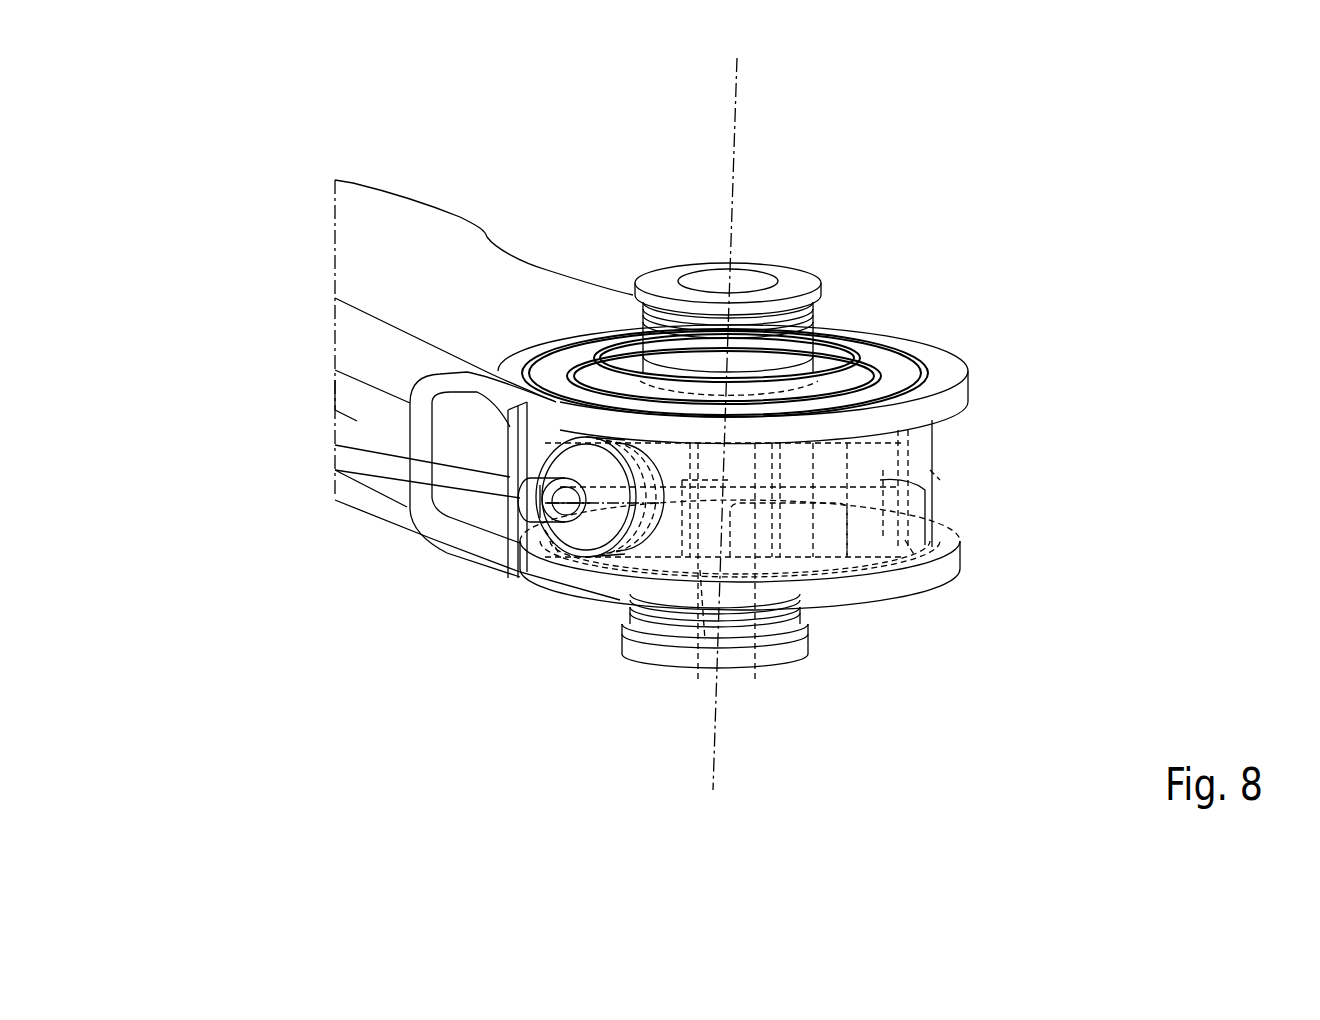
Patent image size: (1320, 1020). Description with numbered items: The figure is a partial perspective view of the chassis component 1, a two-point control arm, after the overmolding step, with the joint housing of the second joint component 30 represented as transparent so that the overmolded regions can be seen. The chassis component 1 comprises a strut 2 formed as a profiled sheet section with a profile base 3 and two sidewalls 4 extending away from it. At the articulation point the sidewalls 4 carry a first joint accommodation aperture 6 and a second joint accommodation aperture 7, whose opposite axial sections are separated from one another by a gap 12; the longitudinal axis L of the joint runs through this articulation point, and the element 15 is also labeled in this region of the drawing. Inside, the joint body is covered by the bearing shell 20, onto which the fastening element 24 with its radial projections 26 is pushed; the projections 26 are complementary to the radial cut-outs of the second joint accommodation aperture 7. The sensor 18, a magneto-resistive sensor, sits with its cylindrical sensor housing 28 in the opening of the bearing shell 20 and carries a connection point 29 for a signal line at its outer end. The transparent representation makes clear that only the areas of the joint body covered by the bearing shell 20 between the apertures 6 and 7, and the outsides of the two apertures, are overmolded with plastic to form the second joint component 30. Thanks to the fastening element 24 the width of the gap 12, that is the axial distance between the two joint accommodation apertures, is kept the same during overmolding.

The chassis component 1 is at (248, 249).
The strut 2 is at (334, 395).
The profile base 3 is at (357, 412).
The sidewalls 4 is at (382, 220).
The first joint accommodation aperture 6 is at (594, 600).
The second joint accommodation aperture 7 is at (882, 354).
The gap 12 is at (760, 510).
The end flange 15 is at (660, 280).
The sensor 18 is at (548, 522).
The bearing shell 20 is at (850, 428).
The fastening element 24 is at (822, 499).
The radial projections 26 is at (935, 490).
The sensor housing 28 is at (580, 538).
The connection point 29 is at (550, 495).
The second joint component 30 is at (950, 472).
The longitudinal axis L is at (735, 122).